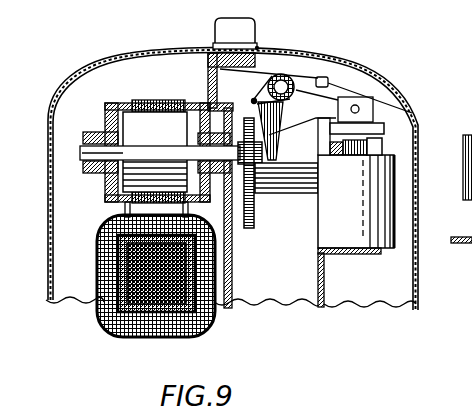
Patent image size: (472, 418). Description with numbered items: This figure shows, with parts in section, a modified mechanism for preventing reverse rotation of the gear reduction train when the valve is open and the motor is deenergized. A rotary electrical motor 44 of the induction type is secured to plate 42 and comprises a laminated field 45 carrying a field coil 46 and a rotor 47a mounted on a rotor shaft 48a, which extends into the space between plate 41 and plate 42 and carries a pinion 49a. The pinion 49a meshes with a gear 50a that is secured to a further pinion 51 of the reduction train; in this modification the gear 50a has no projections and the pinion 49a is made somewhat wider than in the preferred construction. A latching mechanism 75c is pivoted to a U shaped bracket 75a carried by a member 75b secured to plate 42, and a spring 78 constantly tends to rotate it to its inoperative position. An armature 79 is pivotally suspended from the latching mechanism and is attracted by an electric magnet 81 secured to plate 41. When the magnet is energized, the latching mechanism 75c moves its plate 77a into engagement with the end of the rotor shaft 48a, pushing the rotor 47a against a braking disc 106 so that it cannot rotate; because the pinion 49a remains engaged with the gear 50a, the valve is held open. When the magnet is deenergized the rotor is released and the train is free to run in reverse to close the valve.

The braking disc 106 is at (115, 103).
The rotor 47a is at (148, 128).
The rotor shaft 48a is at (80, 162).
The rotary electrical motor 44 is at (96, 213).
The laminated field 45 is at (140, 278).
The field coil 46 is at (104, 322).
The plate 42 is at (233, 295).
The plate 41 is at (326, 295).
The gear 50a is at (249, 230).
The pinion 49a is at (264, 153).
The pinion 51 is at (284, 195).
The electric magnet 81 is at (399, 198).
The armature 79 is at (385, 128).
The spring 78 is at (258, 99).
The plate 77a is at (276, 135).
The U shaped bracket 75a is at (256, 72).
The member 75b is at (257, 47).
The latching mechanism 75c is at (331, 97).